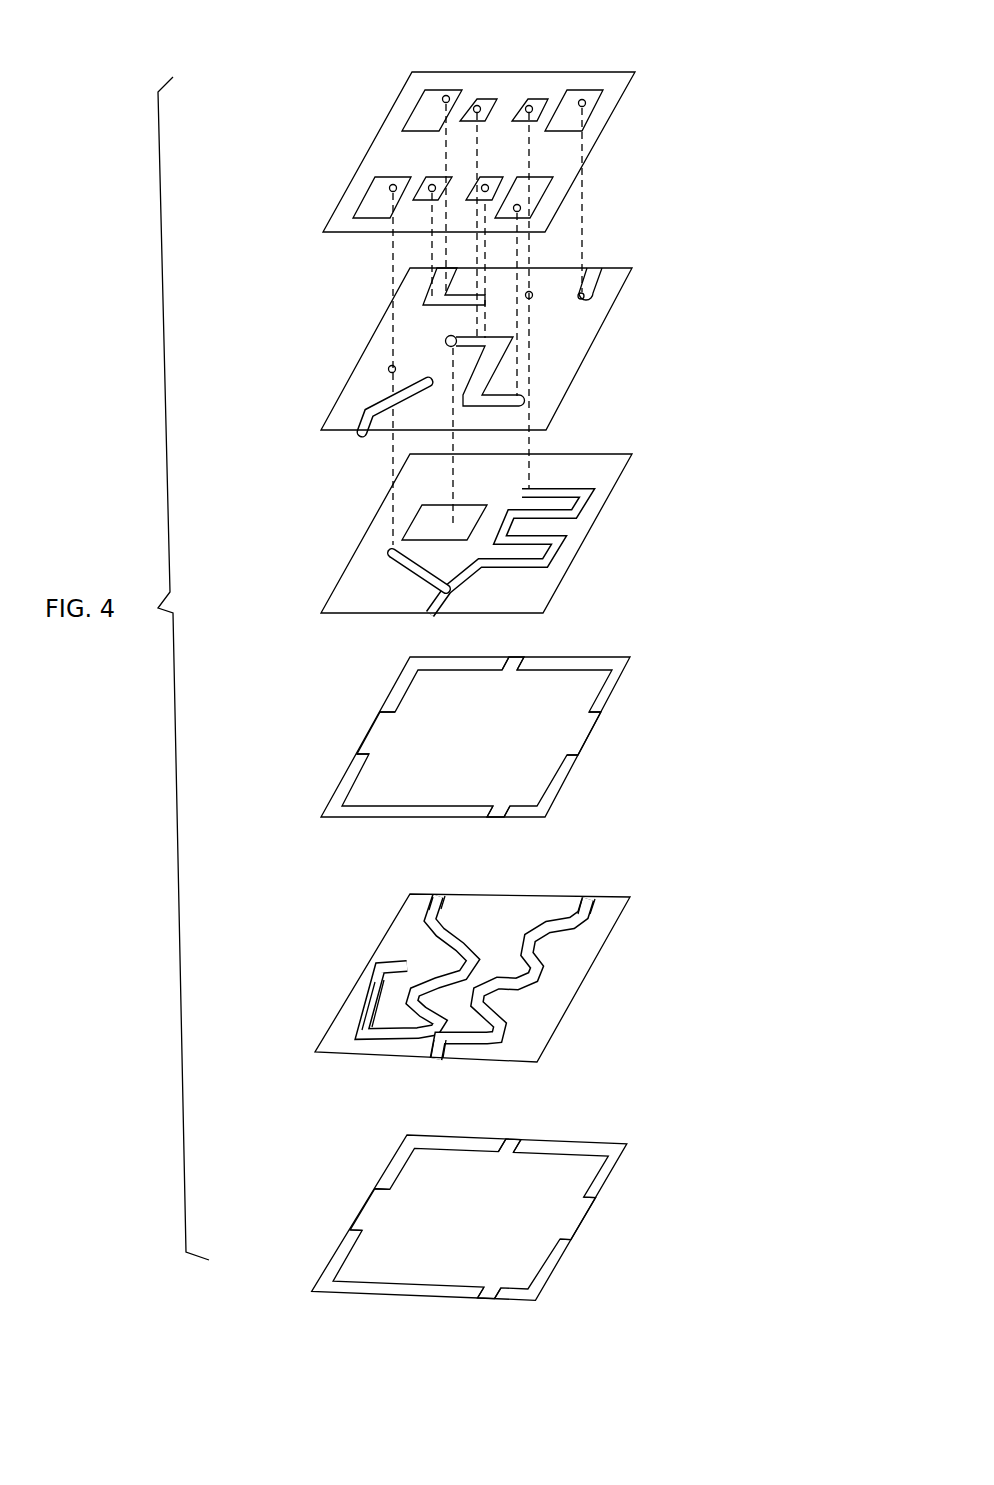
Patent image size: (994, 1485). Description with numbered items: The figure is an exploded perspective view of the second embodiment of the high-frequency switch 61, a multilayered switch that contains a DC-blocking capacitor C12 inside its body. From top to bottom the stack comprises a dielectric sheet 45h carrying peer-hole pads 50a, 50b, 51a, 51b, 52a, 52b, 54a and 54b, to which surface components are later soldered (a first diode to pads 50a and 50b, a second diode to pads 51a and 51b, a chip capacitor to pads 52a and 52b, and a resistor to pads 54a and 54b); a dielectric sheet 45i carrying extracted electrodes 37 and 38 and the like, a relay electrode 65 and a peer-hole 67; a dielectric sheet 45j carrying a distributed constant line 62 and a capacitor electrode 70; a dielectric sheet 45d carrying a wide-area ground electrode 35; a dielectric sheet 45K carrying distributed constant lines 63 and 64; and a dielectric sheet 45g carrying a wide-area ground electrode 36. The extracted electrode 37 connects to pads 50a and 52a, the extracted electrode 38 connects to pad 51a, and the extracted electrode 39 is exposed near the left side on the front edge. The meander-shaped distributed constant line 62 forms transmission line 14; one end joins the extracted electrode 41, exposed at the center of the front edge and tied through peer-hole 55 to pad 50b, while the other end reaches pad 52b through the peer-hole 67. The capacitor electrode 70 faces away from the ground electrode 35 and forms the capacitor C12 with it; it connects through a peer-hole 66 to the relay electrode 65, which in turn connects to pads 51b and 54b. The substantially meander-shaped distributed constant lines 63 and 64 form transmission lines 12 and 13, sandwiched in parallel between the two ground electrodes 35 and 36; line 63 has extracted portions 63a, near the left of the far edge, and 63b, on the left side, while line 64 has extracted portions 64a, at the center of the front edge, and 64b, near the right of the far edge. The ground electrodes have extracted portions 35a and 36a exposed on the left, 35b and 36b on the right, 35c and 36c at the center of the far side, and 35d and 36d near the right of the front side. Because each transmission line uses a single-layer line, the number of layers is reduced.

The high-frequency switch 61 is at (286, 113).
The dielectric sheet 45h is at (602, 117).
The dielectric sheet 45i is at (595, 310).
The dielectric sheet 45j is at (608, 478).
The dielectric sheet 45d is at (612, 683).
The dielectric sheet 45K is at (593, 937).
The dielectric sheet 45g is at (612, 1160).
The peer-hole pad 50a is at (422, 108).
The peer-hole pad 50b is at (367, 202).
The peer-hole pad 51a is at (577, 98).
The peer-hole pad 51b is at (535, 193).
The peer-hole pad 52a is at (480, 98).
The peer-hole pad 52b is at (530, 98).
The peer-hole pad 54a is at (435, 178).
The peer-hole pad 54b is at (492, 177).
The extracted electrode 37 is at (423, 302).
The extracted electrode 38 is at (602, 283).
The extracted electrode 39 is at (352, 412).
The extracted electrode 41 is at (430, 610).
The peer-hole 55 is at (392, 369).
The peer-hole 66 is at (446, 340).
The peer-hole 67 is at (533, 298).
The relay electrode 65 is at (503, 363).
The capacitor electrode 70 is at (425, 520).
The distributed constant line 62 is at (585, 508).
The distributed constant line 63 is at (457, 958).
The extracted portion 63a is at (433, 903).
The extracted portion 63b is at (372, 972).
The distributed constant line 64 is at (540, 980).
The extracted portion 64a is at (433, 1058).
The extracted portion 64b is at (593, 900).
The ground electrode 35 is at (383, 795).
The extracted portion 35a is at (375, 737).
The extracted portion 35b is at (580, 737).
The extracted portion 35c is at (517, 668).
The extracted portion 35d is at (500, 812).
The ground electrode 36 is at (400, 1265).
The extracted portion 36a is at (372, 1213).
The extracted portion 36b is at (572, 1220).
The extracted portion 36c is at (517, 1143).
The extracted portion 36d is at (493, 1285).
The DC-blocking capacitor C12 is at (304, 477).
The transmission line 12 is at (257, 923).
The transmission line 13 is at (668, 983).
The transmission line 14 is at (676, 535).